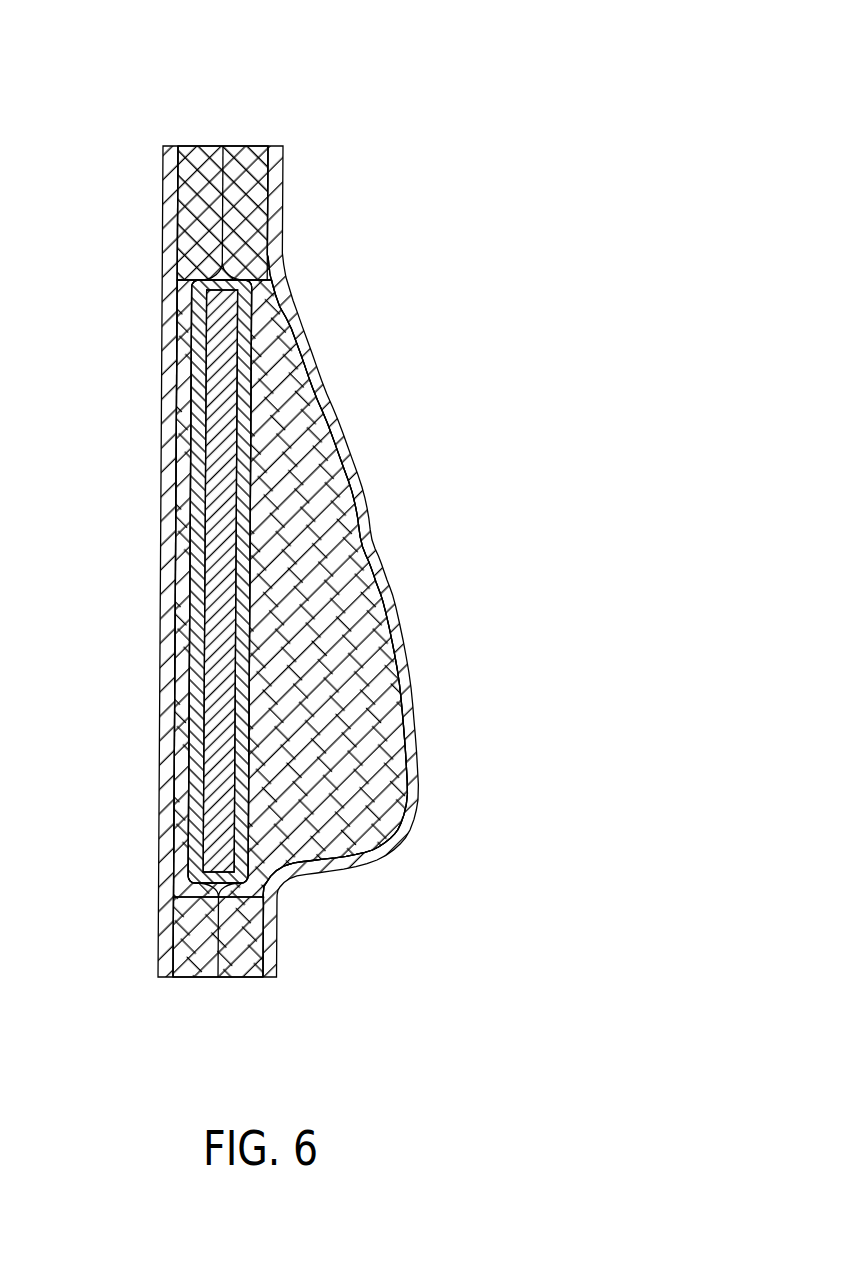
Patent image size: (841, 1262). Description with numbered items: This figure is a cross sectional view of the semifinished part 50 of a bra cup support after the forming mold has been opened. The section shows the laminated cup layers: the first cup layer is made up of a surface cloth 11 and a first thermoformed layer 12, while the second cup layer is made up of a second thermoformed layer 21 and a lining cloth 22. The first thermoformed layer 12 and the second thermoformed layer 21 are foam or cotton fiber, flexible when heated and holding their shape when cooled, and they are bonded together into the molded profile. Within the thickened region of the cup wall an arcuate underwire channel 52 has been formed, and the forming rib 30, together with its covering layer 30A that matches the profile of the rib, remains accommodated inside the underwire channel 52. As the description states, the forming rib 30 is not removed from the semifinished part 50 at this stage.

The surface cloth 11 is at (167, 259).
The first thermoformed layer 12 is at (195, 189).
The second thermoformed layer 21 is at (250, 245).
The lining cloth 22 is at (365, 505).
The forming rib 30 is at (222, 648).
The covering layer 30A is at (200, 468).
The semifinished part 50 is at (304, 133).
The underwire channel 52 is at (183, 775).